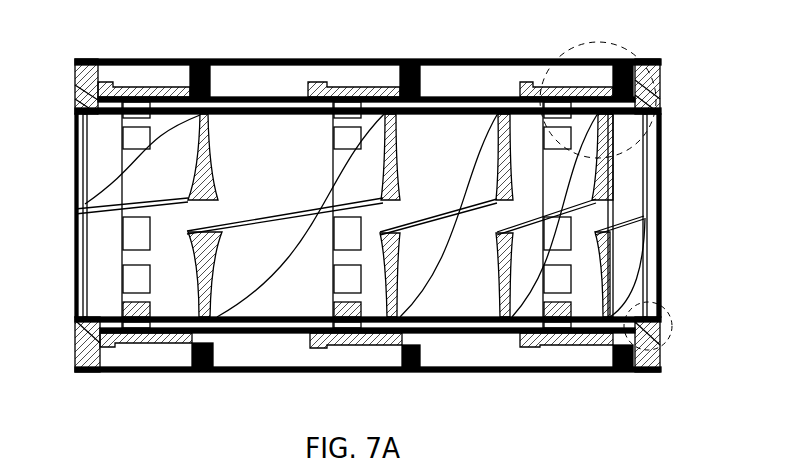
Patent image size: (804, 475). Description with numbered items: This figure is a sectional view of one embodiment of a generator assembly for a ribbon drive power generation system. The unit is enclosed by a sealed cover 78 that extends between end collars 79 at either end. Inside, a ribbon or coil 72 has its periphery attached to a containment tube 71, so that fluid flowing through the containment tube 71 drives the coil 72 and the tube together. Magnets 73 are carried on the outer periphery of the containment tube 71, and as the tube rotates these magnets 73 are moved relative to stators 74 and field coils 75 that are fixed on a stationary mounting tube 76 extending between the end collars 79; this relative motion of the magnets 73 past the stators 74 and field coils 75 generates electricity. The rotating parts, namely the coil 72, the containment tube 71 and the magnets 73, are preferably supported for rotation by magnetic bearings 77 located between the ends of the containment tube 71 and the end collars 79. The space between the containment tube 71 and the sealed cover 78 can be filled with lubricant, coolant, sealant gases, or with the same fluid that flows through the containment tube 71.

The containment tube 71 is at (270, 114).
The ribbon or coil 72 is at (211, 172).
The magnets 73 is at (335, 138).
The stators 74 is at (350, 84).
The field coils 75 is at (420, 72).
The stationary mounting tube 76 is at (477, 97).
The magnetic bearings 77 is at (661, 118).
The sealed cover 78 is at (503, 372).
The end collars 79 is at (85, 368).